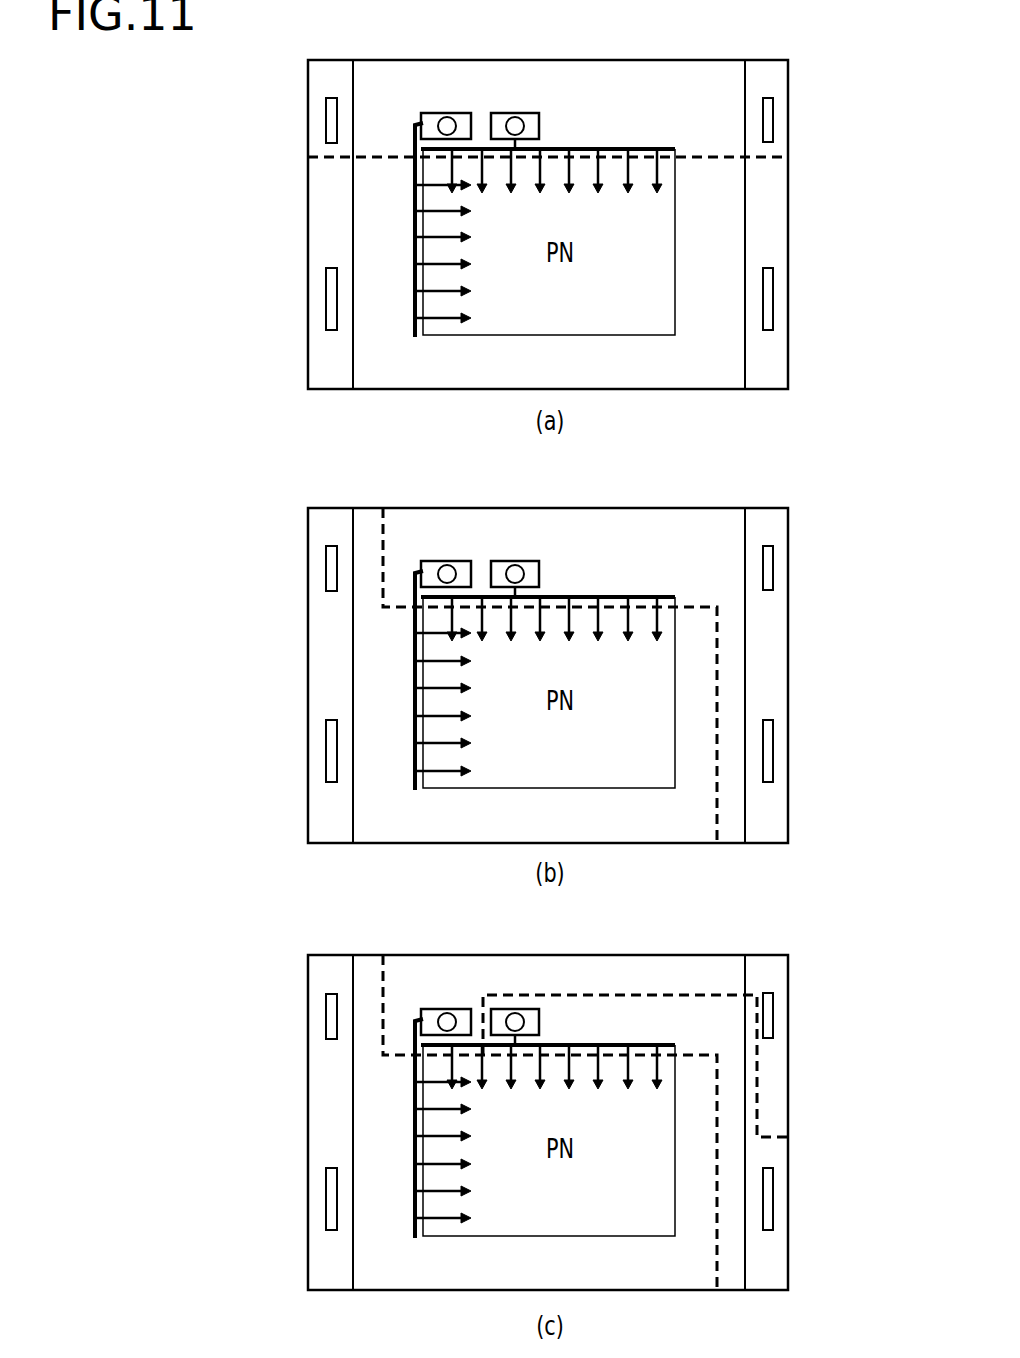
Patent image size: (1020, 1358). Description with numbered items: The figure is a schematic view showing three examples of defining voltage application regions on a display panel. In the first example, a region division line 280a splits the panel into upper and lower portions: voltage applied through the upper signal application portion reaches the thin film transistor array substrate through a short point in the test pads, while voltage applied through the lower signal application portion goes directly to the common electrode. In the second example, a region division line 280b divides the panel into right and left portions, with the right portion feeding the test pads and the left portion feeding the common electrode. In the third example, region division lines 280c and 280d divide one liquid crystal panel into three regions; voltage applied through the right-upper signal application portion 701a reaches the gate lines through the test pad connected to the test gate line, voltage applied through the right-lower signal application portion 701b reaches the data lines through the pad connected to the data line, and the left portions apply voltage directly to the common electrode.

The signal application portion 701a is at (766, 1006).
The signal application portion 701b is at (766, 1196).
The region division line 280a is at (766, 156).
The region division line 280b is at (718, 665).
The region division line 280c is at (383, 1003).
The region division line 280d is at (758, 1073).